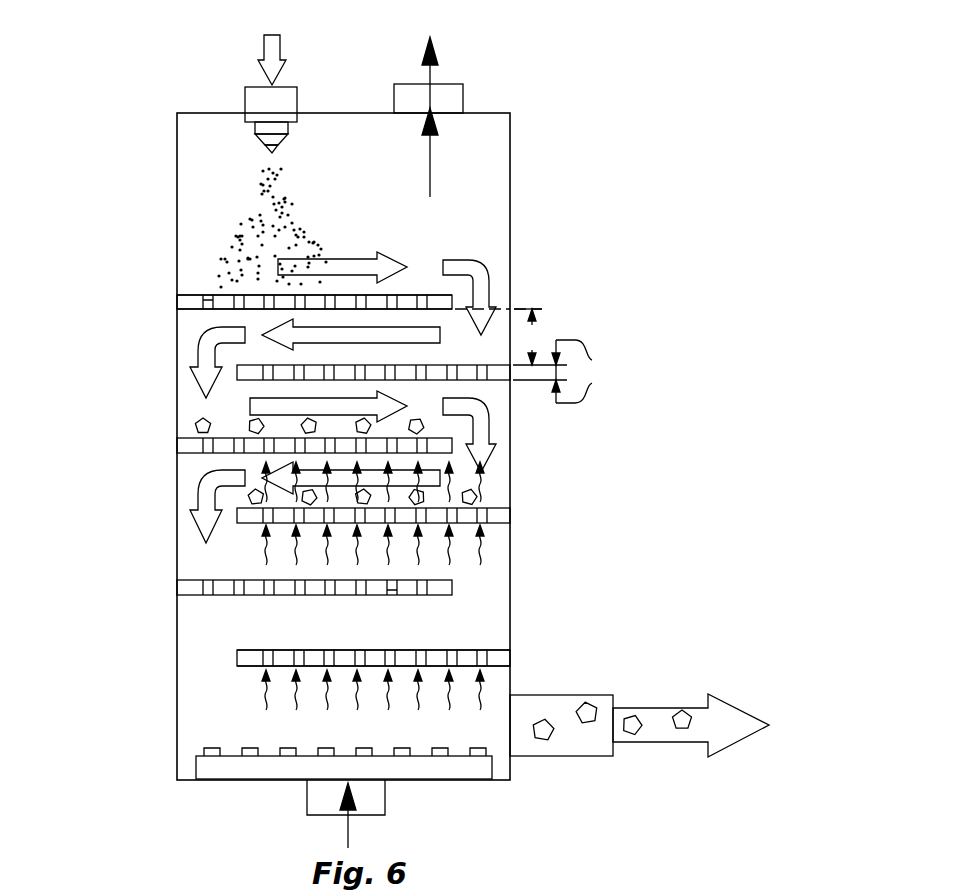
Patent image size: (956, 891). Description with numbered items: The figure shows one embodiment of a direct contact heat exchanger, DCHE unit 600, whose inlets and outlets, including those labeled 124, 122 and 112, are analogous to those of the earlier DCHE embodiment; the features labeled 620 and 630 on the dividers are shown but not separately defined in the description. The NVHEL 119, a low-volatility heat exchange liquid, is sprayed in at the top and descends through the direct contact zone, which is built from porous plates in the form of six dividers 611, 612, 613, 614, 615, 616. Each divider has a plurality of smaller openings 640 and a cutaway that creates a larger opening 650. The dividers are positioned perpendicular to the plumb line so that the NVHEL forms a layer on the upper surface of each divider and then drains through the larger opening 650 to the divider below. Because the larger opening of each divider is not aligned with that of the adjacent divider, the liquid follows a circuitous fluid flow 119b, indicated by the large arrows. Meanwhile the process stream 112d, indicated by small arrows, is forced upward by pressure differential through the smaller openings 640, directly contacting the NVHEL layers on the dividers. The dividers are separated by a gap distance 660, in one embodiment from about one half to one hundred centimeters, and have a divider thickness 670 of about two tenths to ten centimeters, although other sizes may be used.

The DCHE unit 600 is at (125, 75).
The NVHEL 119 is at (263, 48).
The gas outlet 124 is at (432, 70).
The circuitous fluid flow 119b is at (480, 273).
The divider 611 is at (183, 303).
The divider 612 is at (245, 372).
The divider 613 is at (183, 447).
The divider 614 is at (243, 516).
The divider 615 is at (183, 588).
The divider 616 is at (243, 661).
The openings 640 is at (210, 297).
The tray upper surface 620 is at (192, 297).
The tray lower surface 630 is at (190, 311).
The gap distance 660 is at (532, 337).
The divider thickness 670 is at (581, 371).
The process stream 112d is at (482, 550).
The opening 650 is at (473, 585).
The product outlet 122 is at (655, 708).
The heated gas inlet 112 is at (348, 840).